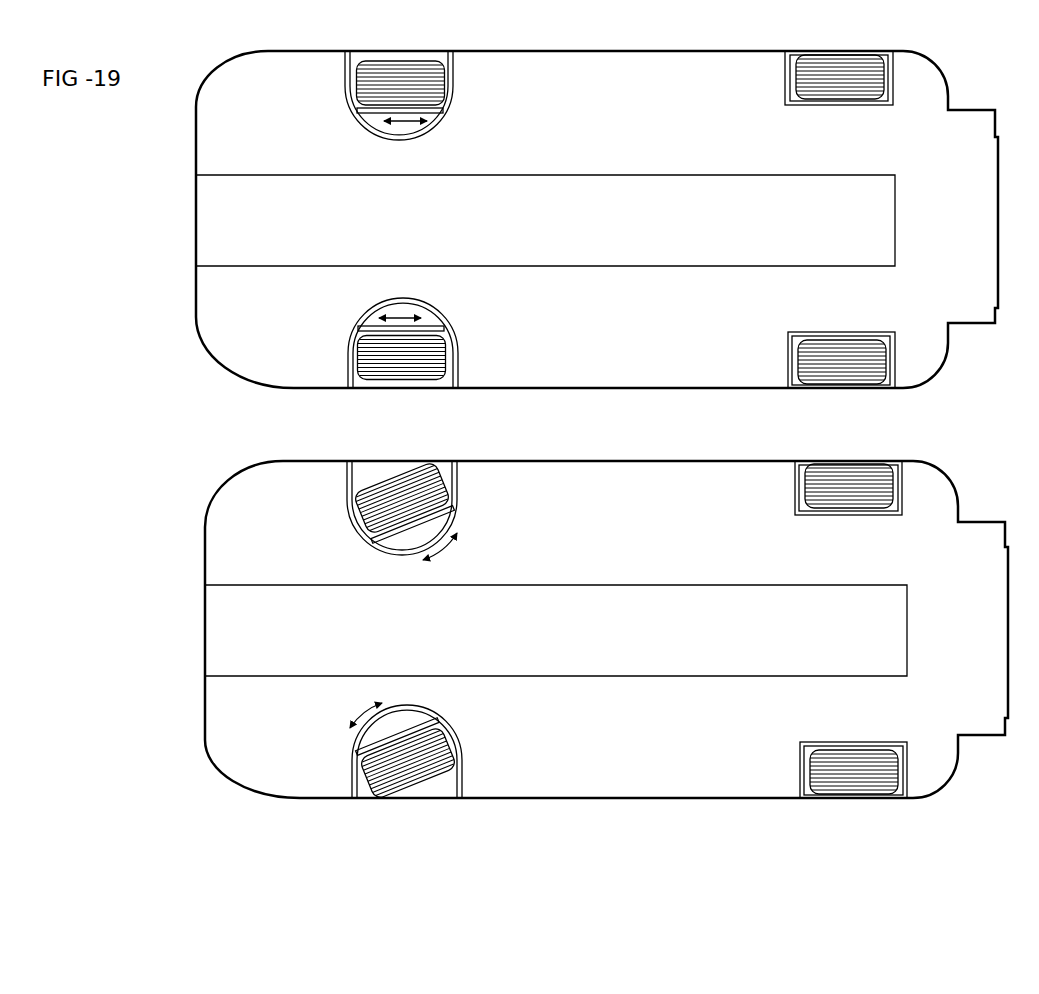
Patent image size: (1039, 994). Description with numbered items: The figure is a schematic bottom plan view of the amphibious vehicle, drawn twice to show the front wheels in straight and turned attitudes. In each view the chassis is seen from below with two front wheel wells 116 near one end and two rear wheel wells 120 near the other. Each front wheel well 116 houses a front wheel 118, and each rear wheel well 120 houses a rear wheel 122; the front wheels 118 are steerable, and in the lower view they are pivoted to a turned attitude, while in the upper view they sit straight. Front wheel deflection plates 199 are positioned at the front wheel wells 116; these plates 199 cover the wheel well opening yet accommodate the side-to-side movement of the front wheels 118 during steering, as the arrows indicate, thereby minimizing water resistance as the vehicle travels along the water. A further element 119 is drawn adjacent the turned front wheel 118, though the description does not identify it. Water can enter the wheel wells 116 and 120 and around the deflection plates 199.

The front wheel well 116 is at (397, 547).
The front wheel 118 is at (397, 490).
The vent panel pivot rail 119 is at (437, 523).
The rear wheel well 120 is at (898, 462).
The rear wheel 122 is at (877, 496).
The front wheel deflection plate 199 is at (408, 124).